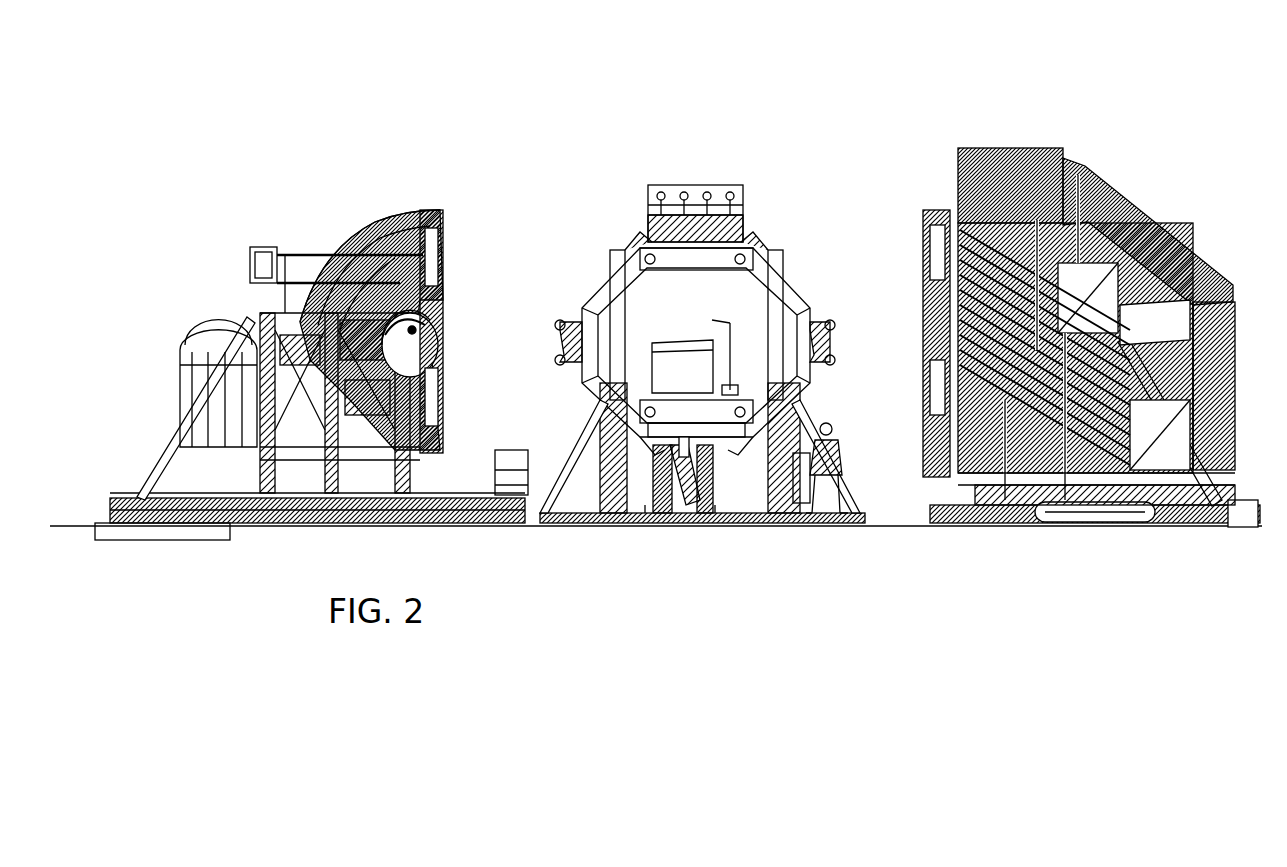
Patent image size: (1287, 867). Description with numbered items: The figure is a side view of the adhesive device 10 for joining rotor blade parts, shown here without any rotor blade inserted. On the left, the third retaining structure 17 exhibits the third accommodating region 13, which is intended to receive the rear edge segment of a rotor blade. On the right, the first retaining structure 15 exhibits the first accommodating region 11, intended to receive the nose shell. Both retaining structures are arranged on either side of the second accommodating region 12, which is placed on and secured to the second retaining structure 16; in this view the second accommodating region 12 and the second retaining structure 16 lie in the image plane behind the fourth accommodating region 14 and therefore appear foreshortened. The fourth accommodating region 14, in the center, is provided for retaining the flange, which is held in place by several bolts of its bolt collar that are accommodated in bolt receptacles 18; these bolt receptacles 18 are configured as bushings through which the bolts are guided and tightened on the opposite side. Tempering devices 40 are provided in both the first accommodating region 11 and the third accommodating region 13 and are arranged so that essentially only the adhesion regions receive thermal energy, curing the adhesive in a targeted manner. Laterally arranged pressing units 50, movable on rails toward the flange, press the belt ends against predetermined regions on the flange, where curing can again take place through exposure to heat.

The adhesive device 10 is at (884, 90).
The first accommodating region 11 is at (947, 330).
The second accommodating region 12 is at (667, 350).
The third accommodating region 13 is at (412, 330).
The fourth accommodating region 14 is at (730, 228).
The first retaining structure 15 is at (1127, 220).
The second retaining structure 16 is at (713, 498).
The third retaining structure 17 is at (378, 240).
The bolt receptacles 18 is at (603, 246).
The tempering devices 40 is at (427, 270).
The pressing units 50 is at (337, 360).